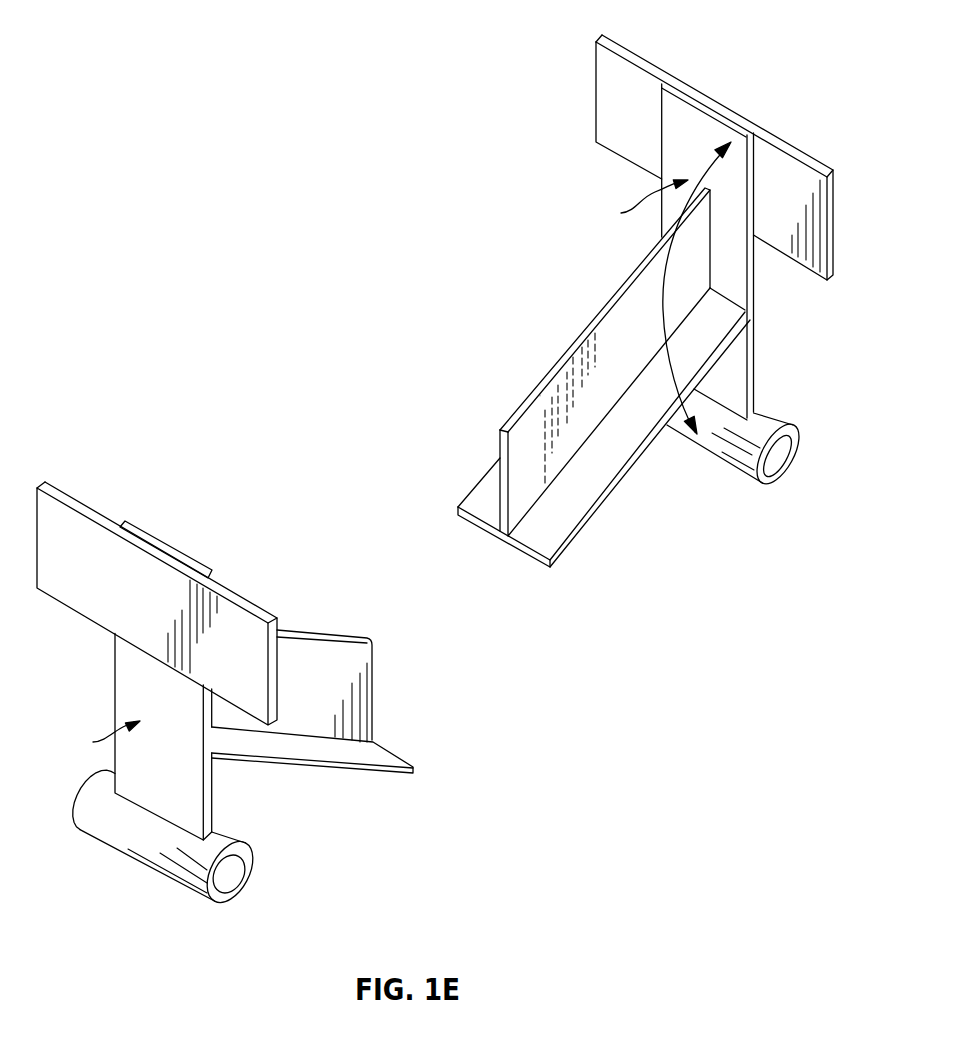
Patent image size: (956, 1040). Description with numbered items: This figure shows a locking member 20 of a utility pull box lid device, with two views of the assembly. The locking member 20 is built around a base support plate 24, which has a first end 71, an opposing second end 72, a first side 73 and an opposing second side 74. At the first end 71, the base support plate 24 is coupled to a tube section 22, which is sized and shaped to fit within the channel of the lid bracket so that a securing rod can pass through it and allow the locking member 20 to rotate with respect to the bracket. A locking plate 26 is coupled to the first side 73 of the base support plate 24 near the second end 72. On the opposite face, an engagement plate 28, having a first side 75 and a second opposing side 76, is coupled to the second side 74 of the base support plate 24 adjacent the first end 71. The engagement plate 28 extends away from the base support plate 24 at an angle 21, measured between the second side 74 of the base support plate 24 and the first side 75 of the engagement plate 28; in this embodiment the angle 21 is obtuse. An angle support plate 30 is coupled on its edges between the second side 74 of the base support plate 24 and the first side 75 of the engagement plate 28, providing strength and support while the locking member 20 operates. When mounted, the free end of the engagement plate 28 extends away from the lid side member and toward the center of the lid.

The locking member 20 is at (178, 131).
The angle 21 is at (660, 313).
The tube section 22 is at (767, 418).
The base support plate 24 is at (673, 147).
The locking plate 26 is at (622, 98).
The engagement plate 28 is at (540, 542).
The angle support plate 30 is at (557, 450).
The second side 74 is at (637, 205).
The first side 75 is at (560, 510).
The second opposing side 76 is at (563, 550).
The first end 71 is at (213, 817).
The second end 72 is at (168, 540).
The first side 73 is at (101, 740).